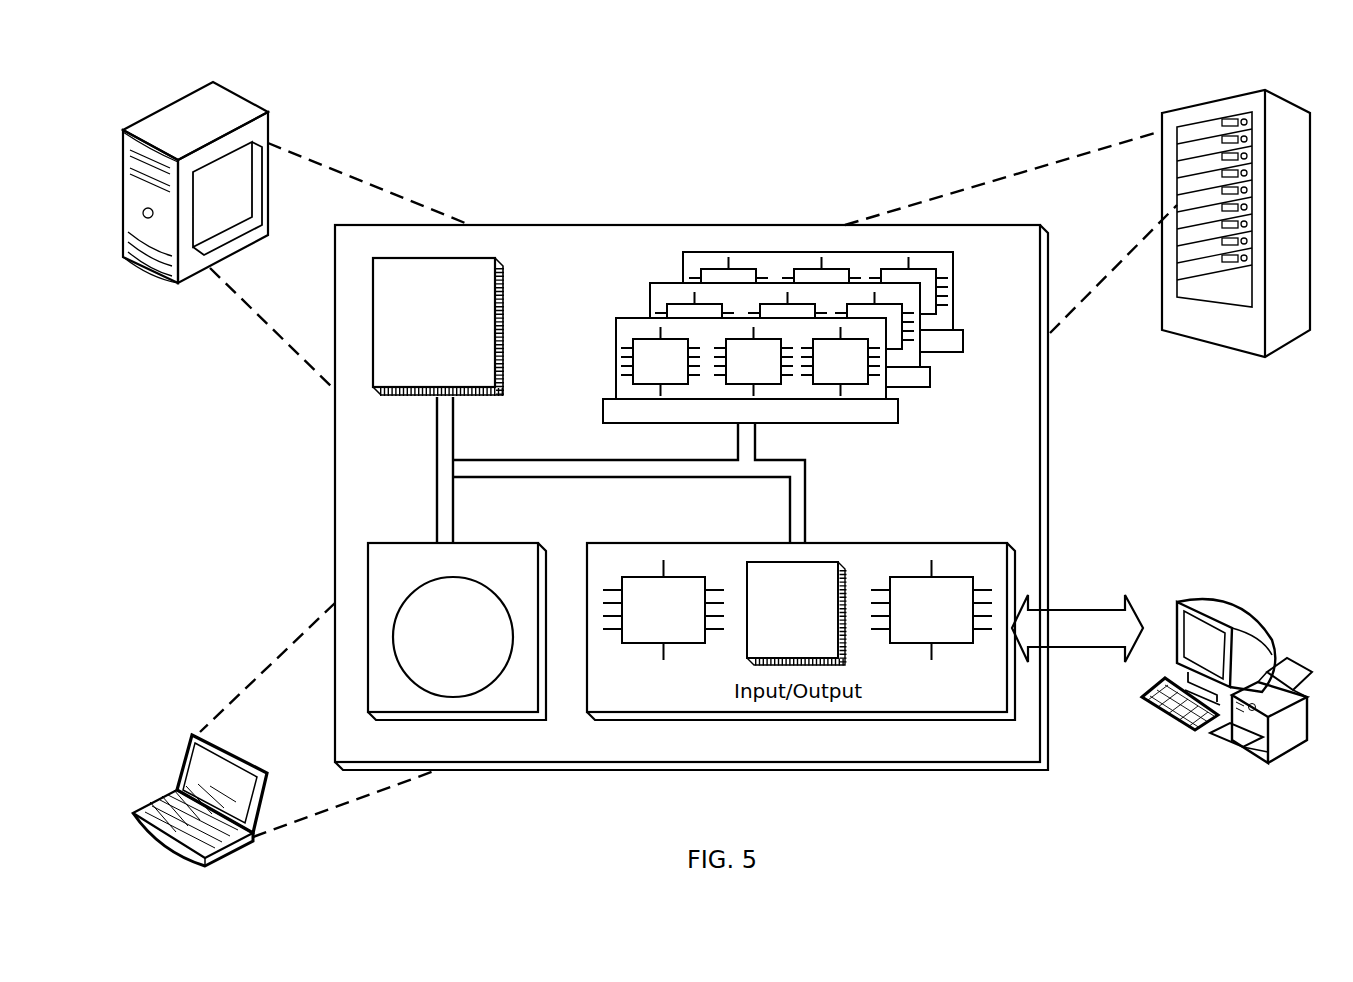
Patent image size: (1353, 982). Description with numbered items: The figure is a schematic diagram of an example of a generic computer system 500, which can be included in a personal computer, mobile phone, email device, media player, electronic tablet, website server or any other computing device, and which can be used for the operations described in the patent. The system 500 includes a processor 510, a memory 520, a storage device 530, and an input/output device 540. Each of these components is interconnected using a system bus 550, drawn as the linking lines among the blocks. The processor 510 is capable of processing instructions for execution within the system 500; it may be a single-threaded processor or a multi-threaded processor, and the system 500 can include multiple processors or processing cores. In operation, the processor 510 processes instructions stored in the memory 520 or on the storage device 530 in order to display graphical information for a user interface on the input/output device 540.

The generic computer system 500 is at (519, 102).
The processor 510 is at (438, 326).
The memory 520 is at (965, 383).
The storage device 530 is at (457, 631).
The input/output device 540 is at (1175, 597).
The system bus 550 is at (613, 478).